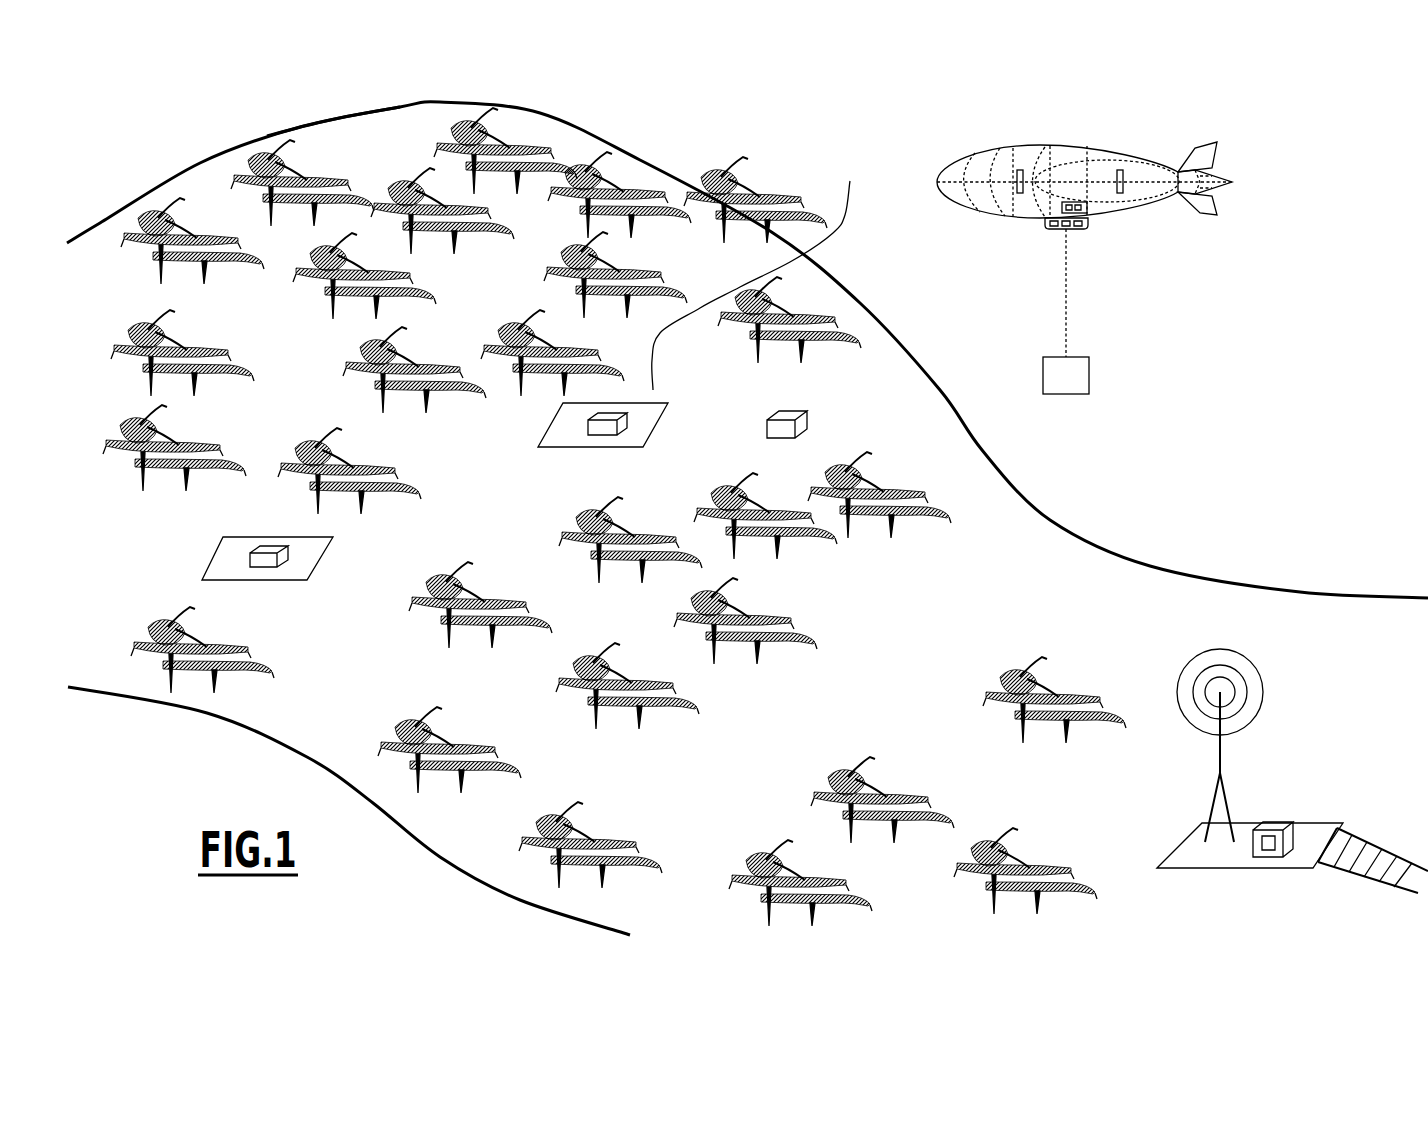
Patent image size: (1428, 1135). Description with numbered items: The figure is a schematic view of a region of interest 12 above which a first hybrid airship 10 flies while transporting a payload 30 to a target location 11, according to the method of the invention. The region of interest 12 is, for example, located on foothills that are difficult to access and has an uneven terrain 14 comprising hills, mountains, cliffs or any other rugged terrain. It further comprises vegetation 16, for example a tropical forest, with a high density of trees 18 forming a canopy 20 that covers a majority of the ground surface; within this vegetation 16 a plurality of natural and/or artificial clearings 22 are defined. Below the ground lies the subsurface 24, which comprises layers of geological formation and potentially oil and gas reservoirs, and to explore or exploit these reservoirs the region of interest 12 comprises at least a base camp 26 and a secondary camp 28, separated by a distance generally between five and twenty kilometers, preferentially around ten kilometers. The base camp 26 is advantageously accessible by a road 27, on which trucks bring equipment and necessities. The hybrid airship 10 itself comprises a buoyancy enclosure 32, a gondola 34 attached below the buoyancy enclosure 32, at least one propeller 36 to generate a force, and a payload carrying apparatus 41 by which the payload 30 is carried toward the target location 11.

The hybrid airship 10 is at (1148, 192).
The target location 11 is at (565, 447).
The region of interest 12 is at (714, 143).
The uneven terrain 14 is at (407, 103).
The vegetation 16 is at (316, 118).
The trees 18 is at (633, 190).
The canopy 20 is at (877, 487).
The clearings 22 is at (757, 270).
The subsurface 24 is at (349, 811).
The base camp 26 is at (1250, 868).
The road 27 is at (1365, 850).
The secondary camp 28 is at (627, 420).
The payload 30 is at (1090, 380).
The buoyancy enclosure 32 is at (1040, 160).
The gondola 34 is at (1050, 228).
The propeller 36 is at (1020, 170).
The payload carrying apparatus 41 is at (1082, 338).